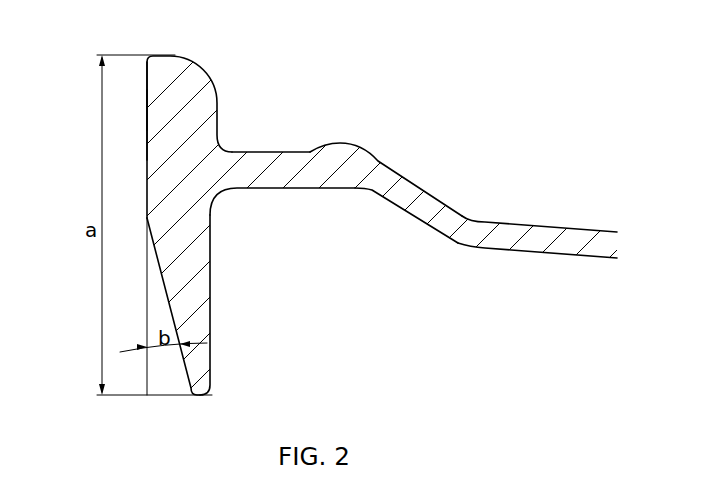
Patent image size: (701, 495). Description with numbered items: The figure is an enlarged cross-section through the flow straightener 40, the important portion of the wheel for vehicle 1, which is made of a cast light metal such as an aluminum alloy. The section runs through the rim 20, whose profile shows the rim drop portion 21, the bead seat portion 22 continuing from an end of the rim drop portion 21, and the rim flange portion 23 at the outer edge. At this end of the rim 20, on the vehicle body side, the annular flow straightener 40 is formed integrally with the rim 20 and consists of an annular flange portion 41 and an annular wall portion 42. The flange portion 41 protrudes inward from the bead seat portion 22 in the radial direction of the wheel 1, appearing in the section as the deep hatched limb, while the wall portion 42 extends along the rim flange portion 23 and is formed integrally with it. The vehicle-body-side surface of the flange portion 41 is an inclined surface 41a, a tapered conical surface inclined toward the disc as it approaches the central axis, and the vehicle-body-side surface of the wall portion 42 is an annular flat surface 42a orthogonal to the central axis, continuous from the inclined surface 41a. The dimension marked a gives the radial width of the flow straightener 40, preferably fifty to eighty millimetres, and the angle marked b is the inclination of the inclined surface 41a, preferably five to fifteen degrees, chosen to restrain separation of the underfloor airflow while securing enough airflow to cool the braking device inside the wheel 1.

The wheel for vehicle 1 is at (350, 247).
The rim 20 is at (382, 139).
The rim drop portion 21 is at (556, 227).
The bead seat portion 22 is at (270, 151).
The rim flange portion 23 is at (202, 70).
The flow straightener 40 is at (181, 228).
The flange portion 41 is at (210, 293).
The inclined surface 41a is at (165, 286).
The wall portion 42 is at (147, 97).
The flat surface 42a is at (147, 125).